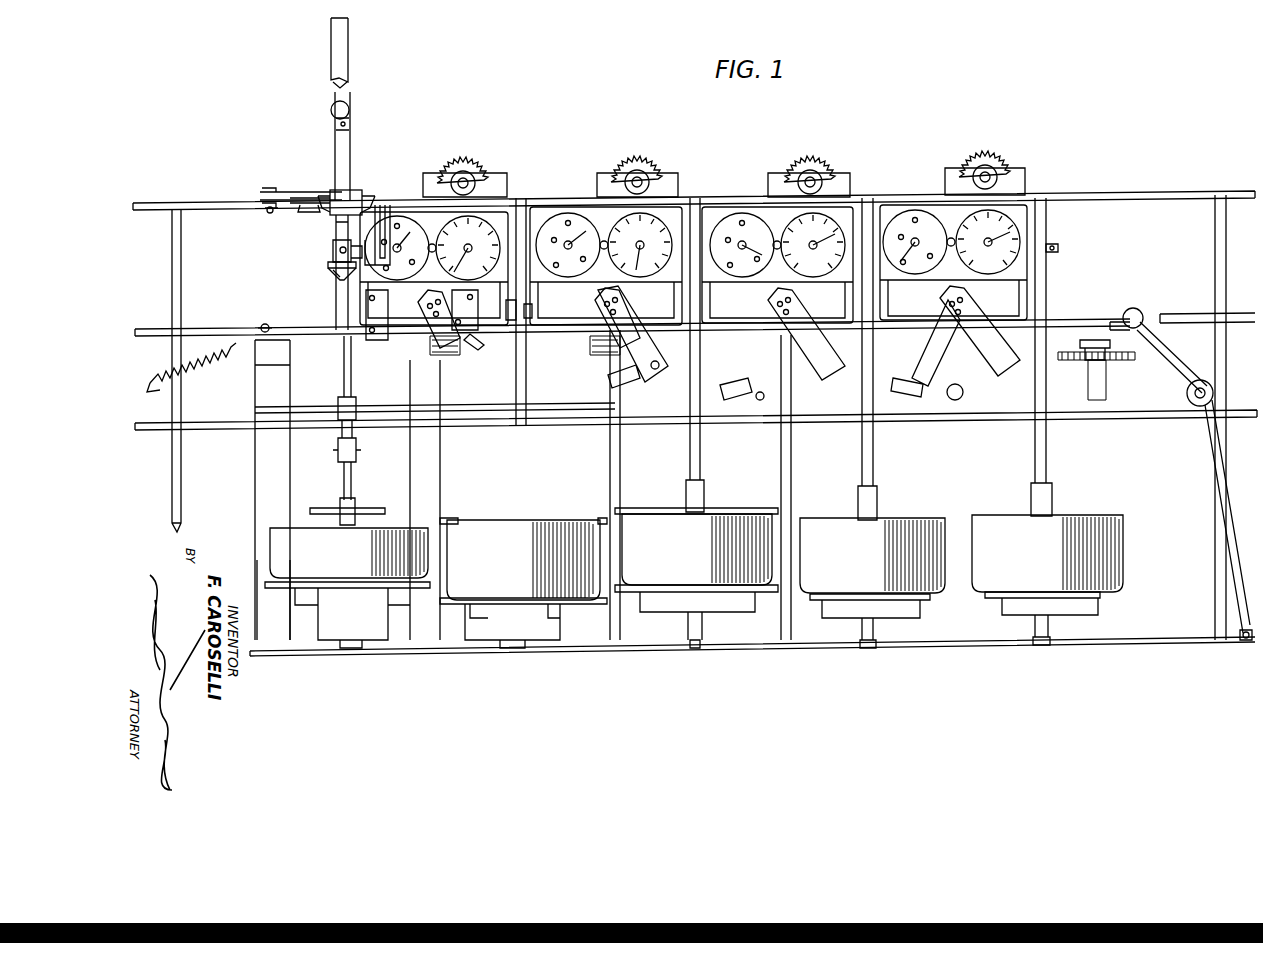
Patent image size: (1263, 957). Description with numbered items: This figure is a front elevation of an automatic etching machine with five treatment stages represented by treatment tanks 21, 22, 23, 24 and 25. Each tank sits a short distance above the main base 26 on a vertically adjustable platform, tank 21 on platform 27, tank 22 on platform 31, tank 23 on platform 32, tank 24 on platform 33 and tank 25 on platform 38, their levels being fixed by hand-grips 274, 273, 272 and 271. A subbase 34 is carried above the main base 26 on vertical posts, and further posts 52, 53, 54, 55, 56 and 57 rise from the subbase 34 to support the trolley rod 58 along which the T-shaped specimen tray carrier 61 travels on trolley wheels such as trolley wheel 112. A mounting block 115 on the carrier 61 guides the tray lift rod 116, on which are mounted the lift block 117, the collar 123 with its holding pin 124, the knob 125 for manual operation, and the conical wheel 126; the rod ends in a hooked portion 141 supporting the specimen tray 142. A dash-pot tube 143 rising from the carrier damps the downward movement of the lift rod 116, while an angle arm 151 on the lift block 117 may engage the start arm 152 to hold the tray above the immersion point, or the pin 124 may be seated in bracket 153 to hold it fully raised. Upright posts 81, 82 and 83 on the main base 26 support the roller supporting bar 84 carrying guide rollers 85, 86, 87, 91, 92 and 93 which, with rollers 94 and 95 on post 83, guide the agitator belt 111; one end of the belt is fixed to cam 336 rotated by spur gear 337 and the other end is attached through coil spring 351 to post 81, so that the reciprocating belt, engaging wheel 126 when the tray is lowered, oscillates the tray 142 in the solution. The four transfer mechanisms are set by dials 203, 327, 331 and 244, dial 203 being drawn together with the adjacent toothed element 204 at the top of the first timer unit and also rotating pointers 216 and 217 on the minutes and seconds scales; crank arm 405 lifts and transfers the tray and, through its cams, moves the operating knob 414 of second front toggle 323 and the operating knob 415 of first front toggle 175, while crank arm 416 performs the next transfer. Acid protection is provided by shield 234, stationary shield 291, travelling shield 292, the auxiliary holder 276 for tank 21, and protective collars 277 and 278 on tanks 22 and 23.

The treatment tank 21 is at (287, 538).
The treatment tank 22 is at (490, 530).
The treatment tank 23 is at (728, 522).
The treatment tank 24 is at (903, 522).
The treatment tank 25 is at (985, 525).
The main base 26 is at (462, 657).
The platform 27 is at (398, 604).
The platform 31 is at (562, 608).
The platform 32 is at (645, 600).
The platform 33 is at (908, 604).
The platform 38 is at (1000, 604).
The subbase 34 is at (1135, 417).
The post 52 is at (519, 214).
The post 53 is at (692, 214).
The post 54 is at (866, 214).
The post 55 is at (1042, 202).
The post 56 is at (183, 270).
The post 57 is at (1227, 253).
The trolley rod 58 is at (234, 204).
The specimen tray carrier 61 is at (303, 198).
The upright post 81 is at (183, 466).
The upright post 82 is at (792, 487).
The upright post 83 is at (1215, 537).
The roller supporting bar 84 is at (212, 329).
The guide roller 85 is at (266, 324).
The guide roller 86 is at (440, 356).
The guide roller 87 is at (640, 350).
The guide roller 91 is at (812, 345).
The guide roller 92 is at (958, 340).
The guide roller 93 is at (1135, 309).
The roller 94 is at (1195, 405).
The roller 95 is at (1245, 642).
The agitator belt 111 is at (1178, 355).
The trolley wheel 112 is at (263, 192).
The mounting block 115 is at (355, 194).
The tray lift rod 116 is at (351, 140).
The lift block 117 is at (333, 242).
The collar 123 is at (330, 265).
The holding pin 124 is at (333, 255).
The knob 125 is at (349, 111).
The wheel 126 is at (335, 275).
The hooked portion 141 is at (357, 403).
The specimen tray 142 is at (372, 505).
The dash-pot tube 143 is at (349, 60).
The angle arm 151 is at (383, 206).
The start arm 152 is at (378, 293).
The bracket 153 is at (336, 219).
The first front toggle 175 is at (458, 300).
The dial 203 is at (461, 172).
The gear 204 is at (482, 170).
The pointer 216 is at (412, 240).
The pointer 217 is at (426, 300).
The shield 234 is at (278, 640).
The dial 244 is at (985, 166).
The hand-grip 271 is at (1058, 249).
The hand-grip 272 is at (896, 214).
The hand-grip 273 is at (720, 214).
The hand-grip 274 is at (545, 214).
The auxiliary holder 276 is at (435, 530).
The protective collar 277 is at (601, 518).
The protective collar 278 is at (633, 514).
The shield 291 is at (563, 412).
The shield 292 is at (286, 352).
The second front toggle 323 is at (550, 292).
The dial 327 is at (637, 172).
The dial 331 is at (810, 172).
The cam 336 is at (1090, 340).
The spur gear 337 is at (1110, 360).
The coil spring 351 is at (200, 368).
The crank arm 405 is at (474, 350).
The operating knob 414 is at (525, 320).
The operating knob 415 is at (510, 320).
The crank arm 416 is at (600, 356).